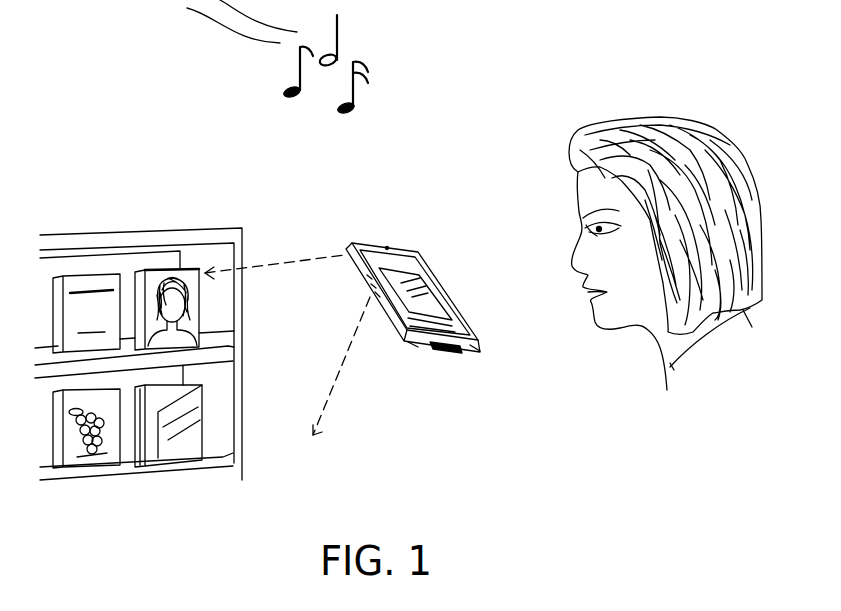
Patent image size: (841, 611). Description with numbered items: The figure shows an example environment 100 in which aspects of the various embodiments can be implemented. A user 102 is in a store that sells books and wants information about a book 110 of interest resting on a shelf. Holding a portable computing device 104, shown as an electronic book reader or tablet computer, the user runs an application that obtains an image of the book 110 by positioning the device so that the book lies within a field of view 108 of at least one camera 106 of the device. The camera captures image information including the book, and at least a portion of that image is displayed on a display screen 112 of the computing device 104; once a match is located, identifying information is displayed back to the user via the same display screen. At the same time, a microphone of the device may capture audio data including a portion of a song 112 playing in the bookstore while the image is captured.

The environment 100 is at (112, 101).
The user 102 is at (533, 172).
The computing device 104 is at (418, 350).
The camera 106 is at (388, 247).
The field of view 108 is at (358, 322).
The book 110 is at (183, 463).
The display screen 112 is at (403, 63).